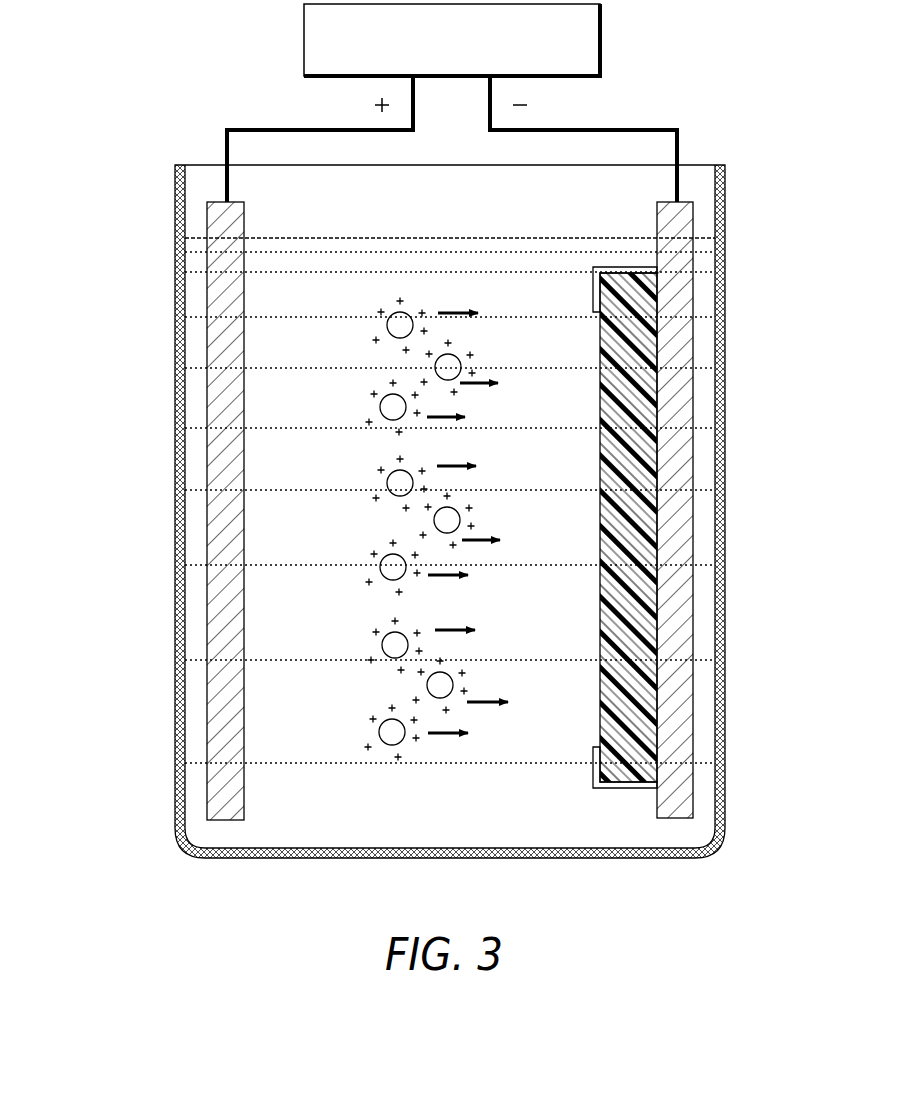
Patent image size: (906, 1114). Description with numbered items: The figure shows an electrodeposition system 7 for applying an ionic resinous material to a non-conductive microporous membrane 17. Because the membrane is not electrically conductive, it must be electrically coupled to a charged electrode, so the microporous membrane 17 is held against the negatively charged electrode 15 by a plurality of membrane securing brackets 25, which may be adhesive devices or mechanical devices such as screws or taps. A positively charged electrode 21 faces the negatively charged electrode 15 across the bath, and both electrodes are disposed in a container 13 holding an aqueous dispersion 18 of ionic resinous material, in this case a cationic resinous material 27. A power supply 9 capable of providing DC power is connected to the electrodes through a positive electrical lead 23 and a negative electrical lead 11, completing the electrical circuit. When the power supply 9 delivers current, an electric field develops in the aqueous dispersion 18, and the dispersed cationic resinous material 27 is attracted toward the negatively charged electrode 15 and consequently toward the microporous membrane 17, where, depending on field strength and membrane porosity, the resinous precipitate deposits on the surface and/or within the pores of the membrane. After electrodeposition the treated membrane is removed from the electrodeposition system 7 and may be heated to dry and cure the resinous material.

The electrodeposition system 7 is at (108, 262).
The power supply 9 is at (600, 43).
The negative electrical lead 11 is at (634, 130).
The container 13 is at (725, 265).
The negatively charged electrode 15 is at (693, 405).
The microporous membrane 17 is at (592, 330).
The aqueous dispersion 18 is at (322, 283).
The positively charged electrode 21 is at (207, 548).
The positive electrical lead 23 is at (272, 130).
The membrane securing brackets 25 is at (625, 268).
The cationic resinous material 27 is at (374, 410).